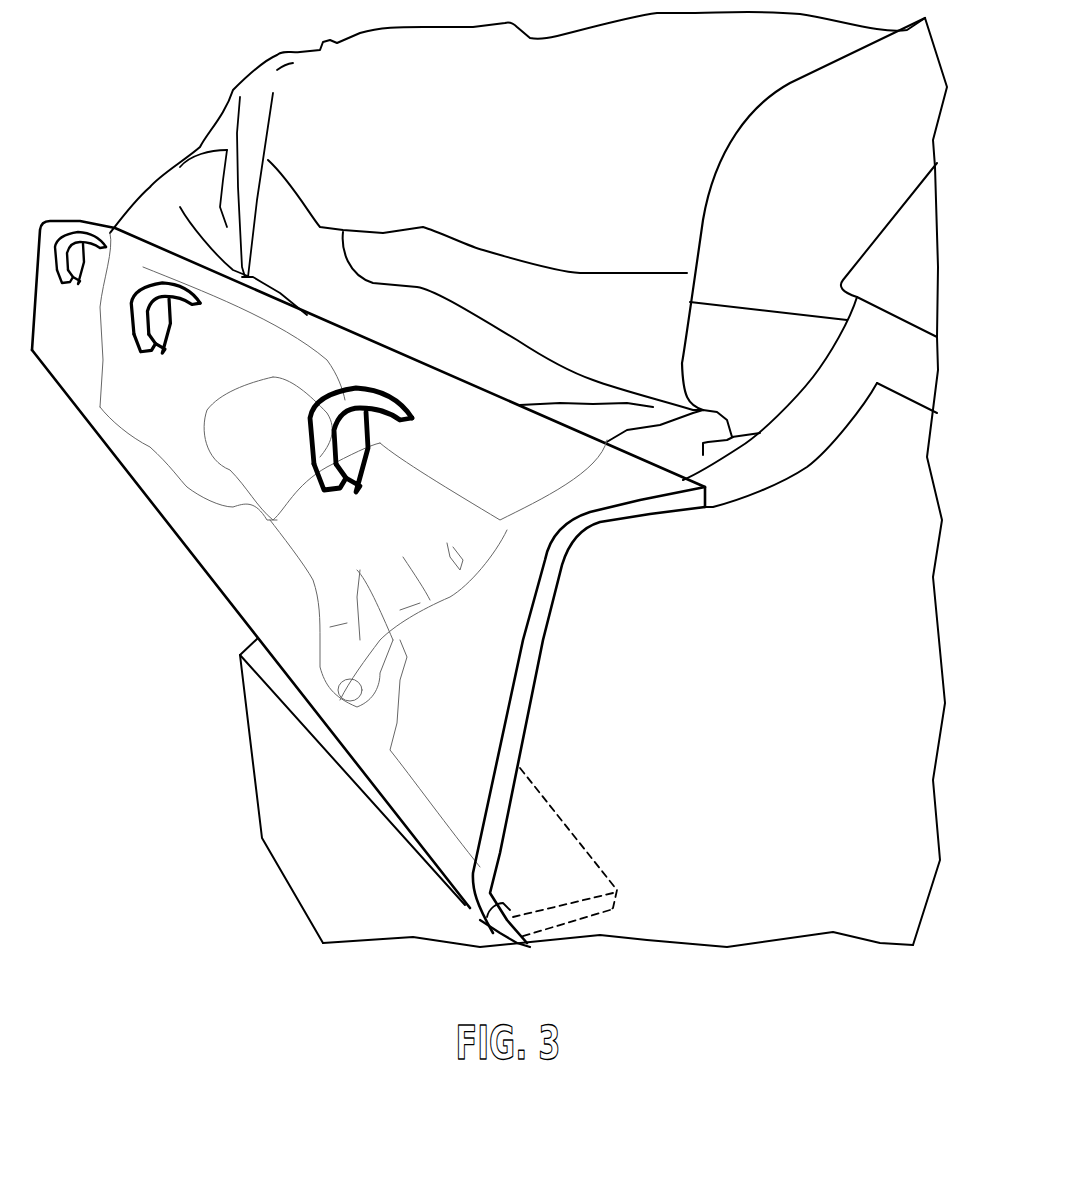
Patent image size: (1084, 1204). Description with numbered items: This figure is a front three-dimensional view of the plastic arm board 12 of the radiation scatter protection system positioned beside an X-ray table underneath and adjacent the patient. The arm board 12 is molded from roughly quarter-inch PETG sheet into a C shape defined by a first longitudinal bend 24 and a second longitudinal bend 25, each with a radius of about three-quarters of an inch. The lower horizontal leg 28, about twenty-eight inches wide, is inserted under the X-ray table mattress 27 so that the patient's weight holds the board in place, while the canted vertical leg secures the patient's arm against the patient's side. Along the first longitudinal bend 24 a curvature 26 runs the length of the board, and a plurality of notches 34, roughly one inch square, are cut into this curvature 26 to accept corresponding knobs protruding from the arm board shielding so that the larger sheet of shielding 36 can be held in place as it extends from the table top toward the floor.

The plastic arm board 12 is at (175, 520).
The first longitudinal bend 24 is at (570, 550).
The second longitudinal bend 25 is at (490, 917).
The curvature 26 is at (650, 513).
The X-ray table mattress 27 is at (690, 900).
The lower horizontal leg 28 is at (507, 925).
The notches 34 is at (100, 240).
The larger sheet of shielding 36 is at (277, 350).